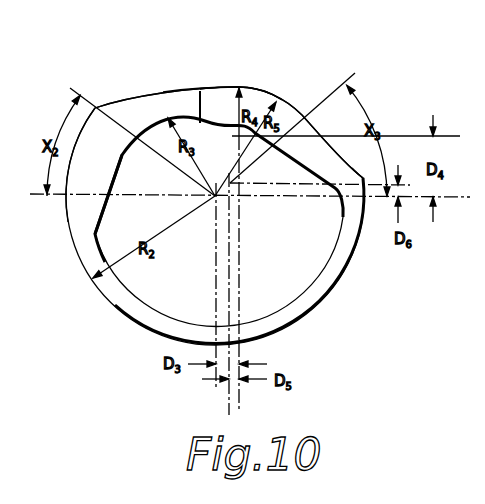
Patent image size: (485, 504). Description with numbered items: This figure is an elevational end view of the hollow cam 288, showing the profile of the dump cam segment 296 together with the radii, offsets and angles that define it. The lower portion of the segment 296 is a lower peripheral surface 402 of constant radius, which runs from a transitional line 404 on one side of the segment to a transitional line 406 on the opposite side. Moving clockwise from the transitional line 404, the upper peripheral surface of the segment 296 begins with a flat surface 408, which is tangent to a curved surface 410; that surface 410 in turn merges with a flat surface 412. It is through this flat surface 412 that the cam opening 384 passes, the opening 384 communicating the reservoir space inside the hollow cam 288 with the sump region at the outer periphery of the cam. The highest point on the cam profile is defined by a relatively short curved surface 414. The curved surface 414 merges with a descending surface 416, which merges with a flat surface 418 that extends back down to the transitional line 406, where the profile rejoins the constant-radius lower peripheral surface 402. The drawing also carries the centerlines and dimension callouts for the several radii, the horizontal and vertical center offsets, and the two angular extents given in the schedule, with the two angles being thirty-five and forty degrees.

The hollow cam 288 is at (130, 325).
The dump cam segment 296 is at (325, 275).
The cam opening 384 is at (218, 110).
The lower peripheral surface 402 is at (297, 322).
The transitional line 404 is at (72, 229).
The transitional line 406 is at (366, 188).
The flat surface 408 is at (104, 190).
The surface 410 is at (170, 86).
The flat surface 412 is at (203, 93).
The curved surface 414 is at (247, 87).
The descending surface 416 is at (280, 100).
The flat surface 418 is at (325, 150).